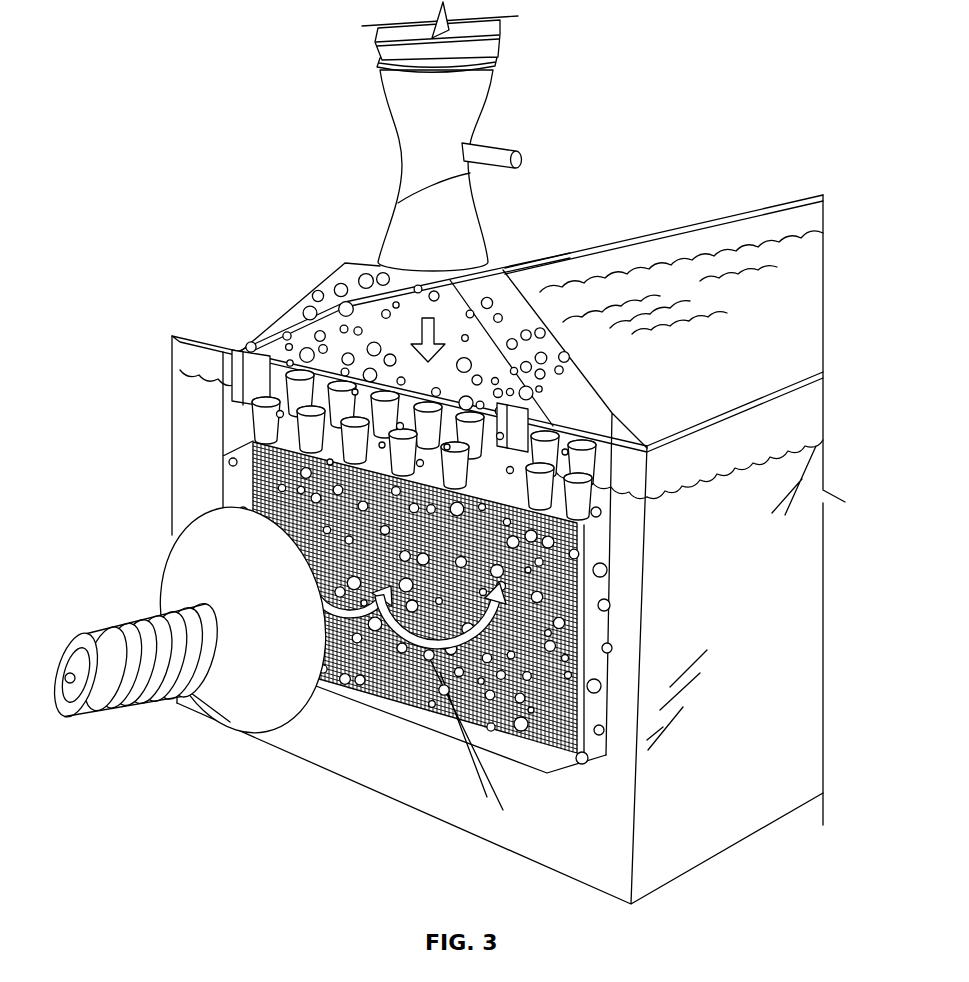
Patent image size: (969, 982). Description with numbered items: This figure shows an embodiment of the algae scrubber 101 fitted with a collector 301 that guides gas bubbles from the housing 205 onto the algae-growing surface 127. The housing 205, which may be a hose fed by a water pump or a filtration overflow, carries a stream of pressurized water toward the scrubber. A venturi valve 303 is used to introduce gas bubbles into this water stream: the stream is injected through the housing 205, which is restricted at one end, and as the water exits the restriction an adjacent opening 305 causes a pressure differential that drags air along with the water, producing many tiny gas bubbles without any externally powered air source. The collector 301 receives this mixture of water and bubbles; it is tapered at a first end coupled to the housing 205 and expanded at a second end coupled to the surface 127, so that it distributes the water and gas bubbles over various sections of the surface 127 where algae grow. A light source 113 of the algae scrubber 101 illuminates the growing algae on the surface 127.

The algae scrubber 101 is at (619, 421).
The light source 113 is at (220, 721).
The surface 127 is at (573, 590).
The housing 205 is at (497, 40).
The collector 301 is at (577, 357).
The venturi valve 303 is at (487, 93).
The opening 305 is at (397, 205).